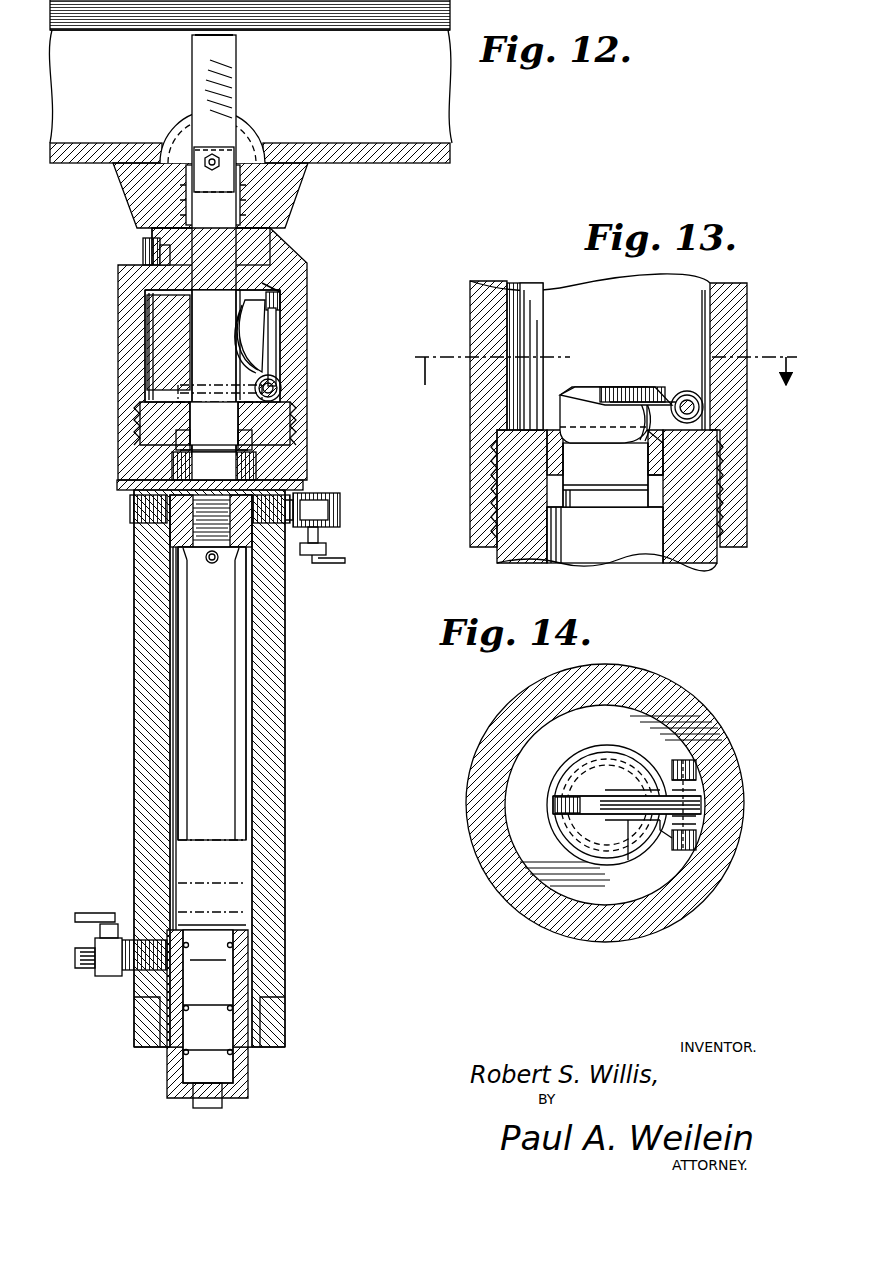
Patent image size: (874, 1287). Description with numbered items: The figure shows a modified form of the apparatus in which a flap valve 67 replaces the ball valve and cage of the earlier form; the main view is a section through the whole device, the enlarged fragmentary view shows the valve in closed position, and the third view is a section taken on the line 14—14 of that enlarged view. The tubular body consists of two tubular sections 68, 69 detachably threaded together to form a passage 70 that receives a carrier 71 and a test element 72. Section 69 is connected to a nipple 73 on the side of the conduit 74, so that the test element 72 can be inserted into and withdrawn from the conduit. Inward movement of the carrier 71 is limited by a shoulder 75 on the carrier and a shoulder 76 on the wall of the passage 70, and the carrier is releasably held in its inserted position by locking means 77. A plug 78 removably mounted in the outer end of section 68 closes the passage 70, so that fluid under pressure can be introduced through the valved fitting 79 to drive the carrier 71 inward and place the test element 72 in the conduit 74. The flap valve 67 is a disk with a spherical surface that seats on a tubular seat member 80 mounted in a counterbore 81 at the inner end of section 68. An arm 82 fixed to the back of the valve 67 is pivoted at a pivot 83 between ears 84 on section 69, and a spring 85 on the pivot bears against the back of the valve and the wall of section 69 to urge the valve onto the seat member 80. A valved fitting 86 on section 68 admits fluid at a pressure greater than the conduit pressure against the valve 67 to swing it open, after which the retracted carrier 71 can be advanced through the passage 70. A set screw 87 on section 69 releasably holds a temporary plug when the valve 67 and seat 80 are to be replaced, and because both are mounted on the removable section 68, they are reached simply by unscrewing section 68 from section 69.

In FIG. 13, the section line 14 is at (605, 357).
In FIG. 12, the flap valve 67 is at (272, 322).
In FIG. 13, the flap valve 67 is at (592, 383).
In FIG. 14, the flap valve 67 is at (550, 782).
In FIG. 12, the tubular section 68 is at (134, 684).
In FIG. 13, the tubular section 68 is at (500, 555).
In FIG. 12, the tubular section 69 is at (120, 318).
In FIG. 13, the tubular section 69 is at (470, 300).
In FIG. 14, the tubular section 69 is at (500, 712).
In FIG. 12, the passage 70 is at (260, 672).
In FIG. 13, the passage 70 is at (655, 560).
In FIG. 12, the carrier 71 is at (186, 352).
In FIG. 12, the test element 72 is at (240, 90).
In FIG. 12, the nipple 73 is at (140, 193).
In FIG. 12, the conduit 74 is at (250, 81).
In FIG. 12, the shoulder 75 is at (178, 440).
In FIG. 12, the shoulder 76 is at (184, 462).
In FIG. 12, the releasably locking means 77 is at (162, 528).
In FIG. 12, the plug 78 is at (255, 1068).
In FIG. 12, the valved fitting 79 is at (108, 980).
In FIG. 12, the tubular seat member 80 is at (178, 392).
In FIG. 13, the tubular seat member 80 is at (556, 432).
In FIG. 14, the tubular seat member 80 is at (588, 750).
In FIG. 12, the counterbore 81 is at (180, 420).
In FIG. 13, the counterbore 81 is at (555, 460).
In FIG. 14, the counterbore 81 is at (548, 806).
In FIG. 12, the arm 82 is at (280, 300).
In FIG. 13, the arm 82 is at (622, 387).
In FIG. 14, the arm 82 is at (596, 808).
In FIG. 12, the pivot 83 is at (276, 390).
In FIG. 13, the pivot 83 is at (697, 404).
In FIG. 14, the pivot 83 is at (700, 800).
In FIG. 12, the ears 84 is at (282, 380).
In FIG. 13, the ears 84 is at (703, 425).
In FIG. 14, the ears 84 is at (690, 838).
In FIG. 12, the spring 85 is at (274, 352).
In FIG. 13, the spring 85 is at (700, 362).
In FIG. 14, the spring 85 is at (630, 862).
In FIG. 12, the valved fitting 86 is at (326, 496).
In FIG. 12, the set screw 87 is at (142, 246).